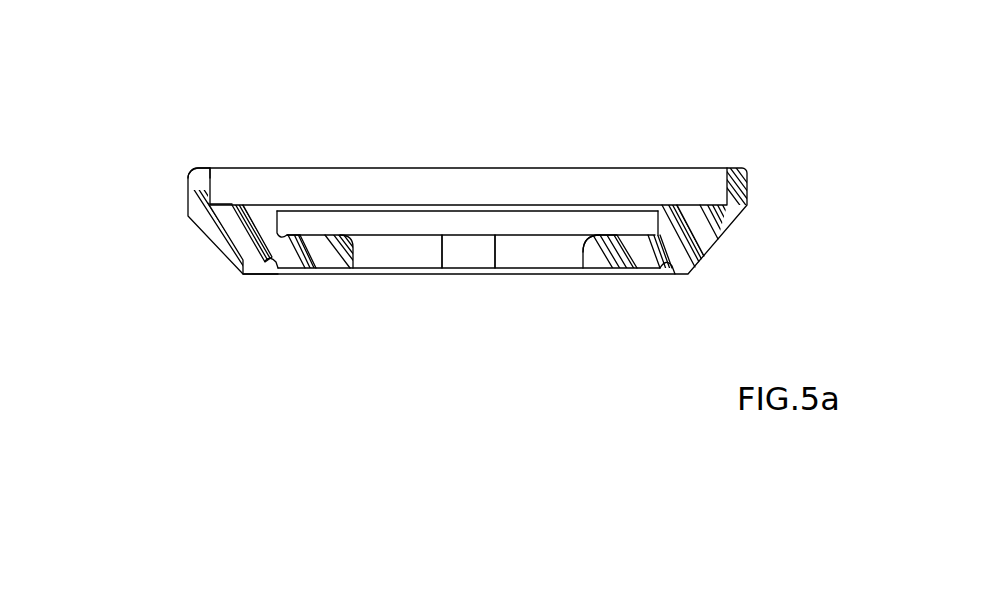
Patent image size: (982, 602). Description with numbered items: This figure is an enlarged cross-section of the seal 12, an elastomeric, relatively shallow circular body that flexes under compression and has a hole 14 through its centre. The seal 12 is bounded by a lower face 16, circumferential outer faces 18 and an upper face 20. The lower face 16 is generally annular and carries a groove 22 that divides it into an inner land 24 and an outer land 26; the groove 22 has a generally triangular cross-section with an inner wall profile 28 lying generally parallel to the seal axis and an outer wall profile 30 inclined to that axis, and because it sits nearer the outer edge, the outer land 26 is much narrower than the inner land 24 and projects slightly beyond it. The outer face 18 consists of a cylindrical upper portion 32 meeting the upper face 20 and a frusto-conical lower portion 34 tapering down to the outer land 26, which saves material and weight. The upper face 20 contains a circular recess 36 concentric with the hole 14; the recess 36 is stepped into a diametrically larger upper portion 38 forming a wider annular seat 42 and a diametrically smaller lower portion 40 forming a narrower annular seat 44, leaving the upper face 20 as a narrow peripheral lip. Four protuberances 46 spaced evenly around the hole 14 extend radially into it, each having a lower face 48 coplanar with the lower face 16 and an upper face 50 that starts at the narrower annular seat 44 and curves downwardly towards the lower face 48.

The seal 12 is at (733, 205).
The hole 14 is at (408, 252).
The lower face 16 is at (318, 268).
The circumferential outer faces 18 is at (188, 199).
The upper face 20 is at (214, 168).
The groove 22 is at (268, 260).
The inner land 24 is at (342, 268).
The outer land 26 is at (268, 262).
The inner wall profile 28 is at (660, 268).
The outer wall profile 30 is at (676, 268).
The cylindrical upper portion 32 is at (747, 187).
The frusto-conical lower portion 34 is at (720, 248).
The circular recess 36 is at (660, 205).
The upper portion 38 is at (258, 203).
The lower portion 40 is at (283, 236).
The wider annular seat 42 is at (210, 204).
The narrower annular seat 44 is at (308, 233).
The protuberances 46 is at (325, 253).
The lower face 48 is at (600, 268).
The upper face 50 is at (583, 267).